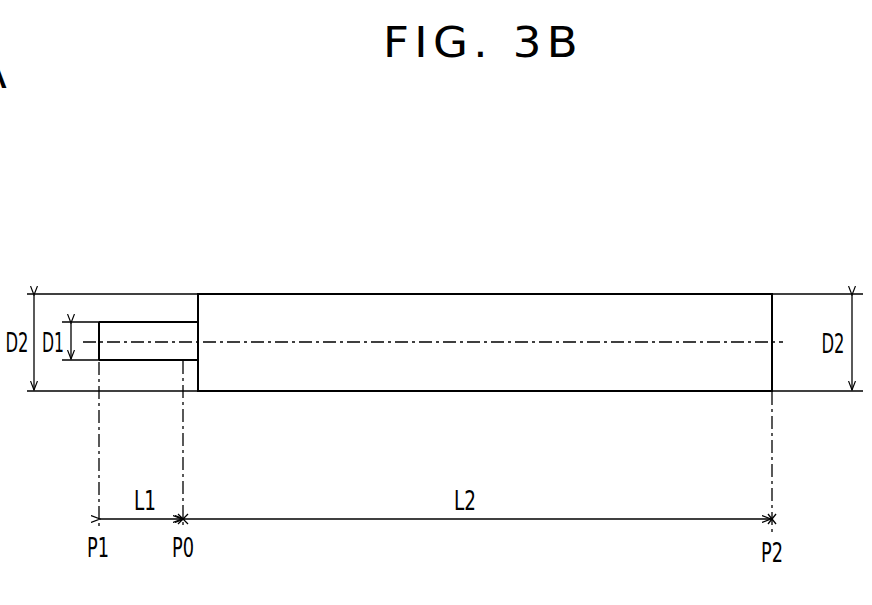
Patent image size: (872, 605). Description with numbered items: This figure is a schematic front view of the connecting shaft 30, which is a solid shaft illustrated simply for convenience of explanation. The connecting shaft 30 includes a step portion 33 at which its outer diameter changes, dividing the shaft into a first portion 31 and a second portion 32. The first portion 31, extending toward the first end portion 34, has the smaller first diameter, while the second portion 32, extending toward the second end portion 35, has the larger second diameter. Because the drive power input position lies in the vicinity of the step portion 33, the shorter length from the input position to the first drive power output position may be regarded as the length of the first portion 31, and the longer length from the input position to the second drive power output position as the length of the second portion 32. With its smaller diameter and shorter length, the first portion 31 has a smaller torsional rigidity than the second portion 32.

The connecting shaft 30 is at (440, 326).
The first portion 31 is at (144, 362).
The second portion 32 is at (568, 392).
The step portion 33 is at (199, 296).
The first end portion 34 is at (116, 321).
The second end portion 35 is at (757, 294).